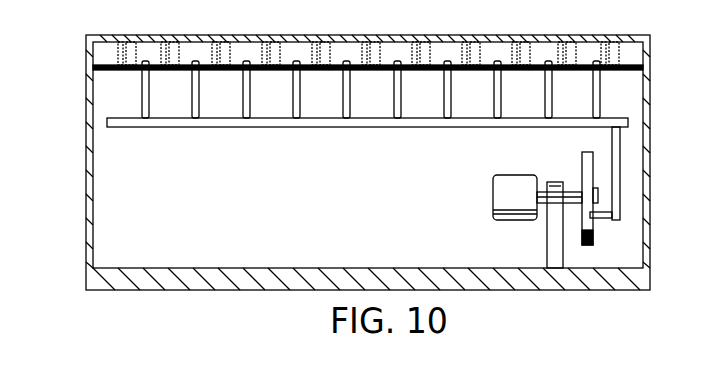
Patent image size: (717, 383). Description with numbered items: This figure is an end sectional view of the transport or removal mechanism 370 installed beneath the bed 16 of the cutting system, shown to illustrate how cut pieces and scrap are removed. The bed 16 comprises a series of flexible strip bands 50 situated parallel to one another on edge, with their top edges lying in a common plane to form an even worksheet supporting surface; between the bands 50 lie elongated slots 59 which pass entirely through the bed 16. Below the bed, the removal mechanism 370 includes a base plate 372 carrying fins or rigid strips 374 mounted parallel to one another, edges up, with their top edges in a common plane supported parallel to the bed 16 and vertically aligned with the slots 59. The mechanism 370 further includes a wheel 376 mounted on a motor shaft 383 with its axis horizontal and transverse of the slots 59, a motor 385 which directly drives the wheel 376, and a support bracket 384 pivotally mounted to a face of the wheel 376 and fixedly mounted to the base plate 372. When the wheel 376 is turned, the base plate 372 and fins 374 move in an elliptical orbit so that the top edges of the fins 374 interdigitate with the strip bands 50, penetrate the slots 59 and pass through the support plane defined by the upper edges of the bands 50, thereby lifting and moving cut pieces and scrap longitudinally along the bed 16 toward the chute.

The bed 16 is at (633, 37).
The flexible strip bands 50 is at (140, 53).
The elongated slots 59 is at (200, 53).
The transport or removal mechanism 370 is at (409, 133).
The base plate 372 is at (253, 127).
The fins or rigid strips 374 is at (553, 83).
The wheel 376 is at (596, 227).
The motor shaft 383 is at (580, 190).
The support bracket 384 is at (620, 142).
The motor 385 is at (495, 218).